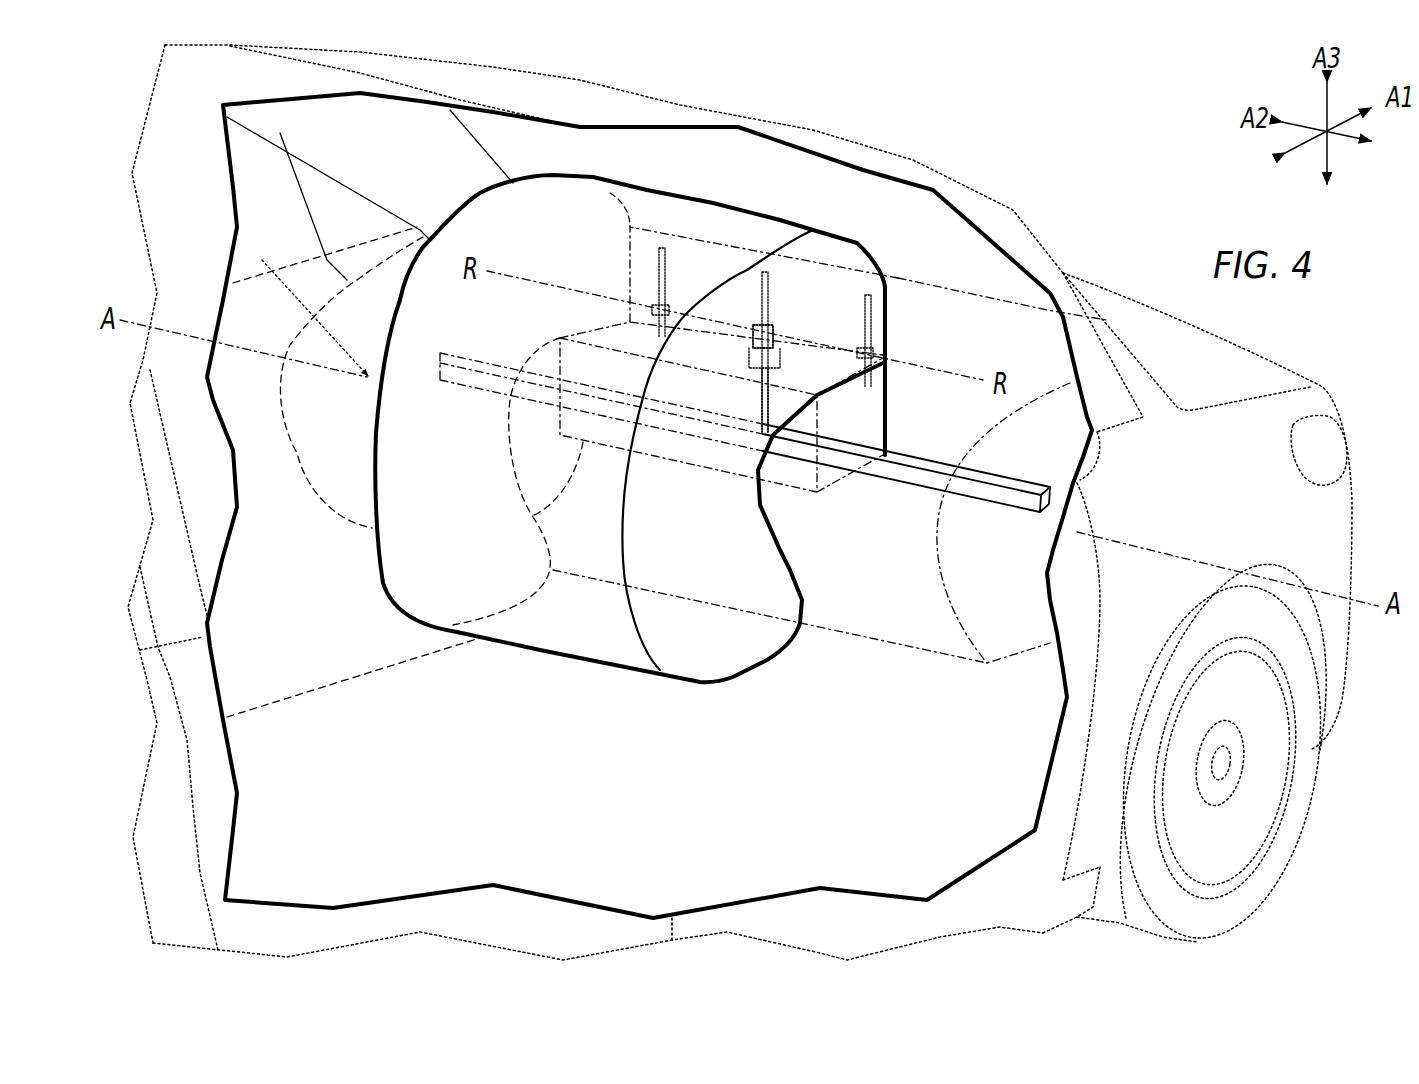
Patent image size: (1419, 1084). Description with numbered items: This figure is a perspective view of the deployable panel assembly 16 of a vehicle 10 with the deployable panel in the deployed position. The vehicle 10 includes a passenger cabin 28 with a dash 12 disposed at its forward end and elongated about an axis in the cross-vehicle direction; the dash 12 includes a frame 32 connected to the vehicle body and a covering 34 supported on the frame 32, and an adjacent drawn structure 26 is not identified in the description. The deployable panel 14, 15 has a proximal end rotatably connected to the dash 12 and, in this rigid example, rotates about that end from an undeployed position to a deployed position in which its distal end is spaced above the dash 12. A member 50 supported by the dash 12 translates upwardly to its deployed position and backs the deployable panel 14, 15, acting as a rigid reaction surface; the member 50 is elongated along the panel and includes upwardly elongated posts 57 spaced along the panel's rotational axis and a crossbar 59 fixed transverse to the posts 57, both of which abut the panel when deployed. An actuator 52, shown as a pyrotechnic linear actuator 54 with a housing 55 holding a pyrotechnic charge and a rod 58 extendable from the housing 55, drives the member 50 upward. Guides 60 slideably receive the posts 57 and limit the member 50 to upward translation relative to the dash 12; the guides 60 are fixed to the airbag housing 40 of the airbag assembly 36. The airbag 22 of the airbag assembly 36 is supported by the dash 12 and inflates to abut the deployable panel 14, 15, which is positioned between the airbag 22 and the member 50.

The vehicle 10 is at (1053, 185).
The dash 12 is at (907, 267).
The deployable panel 14 is at (887, 425).
The deployable panel 15 is at (897, 320).
The deployable panel assembly 16 is at (735, 252).
The airbag 22 is at (588, 656).
The door frame 26 is at (853, 207).
The passenger cabin 28 is at (373, 788).
The frame 32 is at (983, 500).
The covering 34 is at (233, 285).
The airbag assembly 36 is at (795, 502).
The airbag housing 40 is at (530, 519).
The member 50 is at (653, 275).
The actuator 52 is at (740, 413).
The pyrotechnic linear actuator 54 is at (740, 413).
The housing 55 is at (783, 405).
The posts 57 is at (680, 295).
The rod 58 is at (753, 388).
The crossbar 59 is at (690, 360).
The guide 60 is at (647, 318).